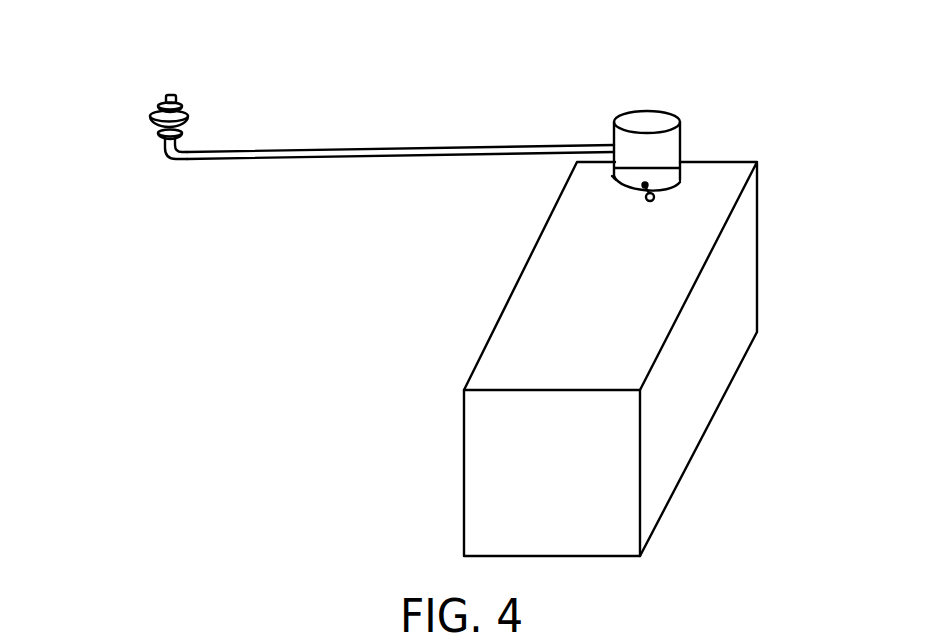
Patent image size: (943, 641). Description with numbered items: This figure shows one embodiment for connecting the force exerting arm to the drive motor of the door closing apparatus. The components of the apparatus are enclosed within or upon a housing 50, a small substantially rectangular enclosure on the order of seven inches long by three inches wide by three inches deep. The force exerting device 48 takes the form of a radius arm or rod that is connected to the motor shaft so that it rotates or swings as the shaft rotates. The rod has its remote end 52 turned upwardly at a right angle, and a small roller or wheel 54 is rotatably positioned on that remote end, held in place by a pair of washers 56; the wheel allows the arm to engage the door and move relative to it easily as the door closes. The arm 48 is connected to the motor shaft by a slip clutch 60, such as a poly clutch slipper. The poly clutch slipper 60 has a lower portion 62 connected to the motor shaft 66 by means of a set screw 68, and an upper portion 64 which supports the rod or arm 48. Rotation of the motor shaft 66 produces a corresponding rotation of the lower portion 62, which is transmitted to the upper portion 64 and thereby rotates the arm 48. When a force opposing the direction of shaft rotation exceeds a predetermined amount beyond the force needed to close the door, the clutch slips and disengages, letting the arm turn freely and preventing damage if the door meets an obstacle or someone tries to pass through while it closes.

The force exerting device 48 is at (418, 148).
The housing 50 is at (478, 485).
The remote end 52 is at (190, 161).
The roller or wheel 54 is at (189, 116).
The washers 56 is at (176, 94).
The slip clutch 60 is at (667, 88).
The lower portion 62 is at (616, 178).
The upper portion 64 is at (680, 144).
The motor shaft 66 is at (652, 201).
The set screw 68 is at (648, 186).